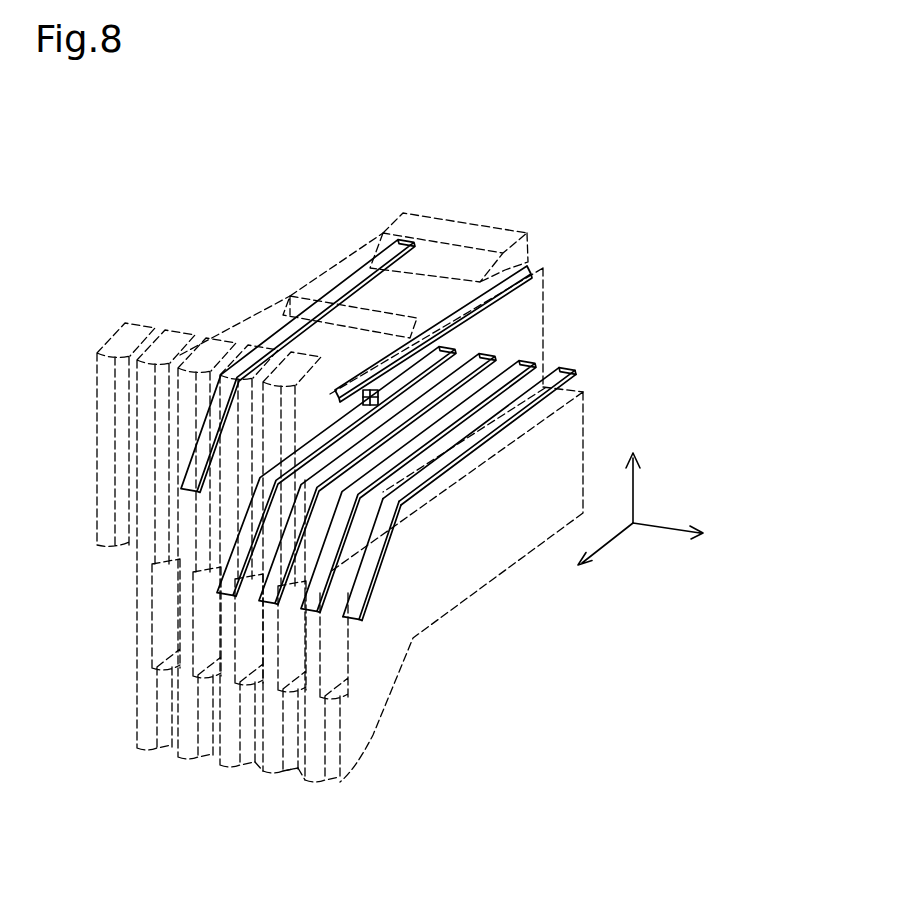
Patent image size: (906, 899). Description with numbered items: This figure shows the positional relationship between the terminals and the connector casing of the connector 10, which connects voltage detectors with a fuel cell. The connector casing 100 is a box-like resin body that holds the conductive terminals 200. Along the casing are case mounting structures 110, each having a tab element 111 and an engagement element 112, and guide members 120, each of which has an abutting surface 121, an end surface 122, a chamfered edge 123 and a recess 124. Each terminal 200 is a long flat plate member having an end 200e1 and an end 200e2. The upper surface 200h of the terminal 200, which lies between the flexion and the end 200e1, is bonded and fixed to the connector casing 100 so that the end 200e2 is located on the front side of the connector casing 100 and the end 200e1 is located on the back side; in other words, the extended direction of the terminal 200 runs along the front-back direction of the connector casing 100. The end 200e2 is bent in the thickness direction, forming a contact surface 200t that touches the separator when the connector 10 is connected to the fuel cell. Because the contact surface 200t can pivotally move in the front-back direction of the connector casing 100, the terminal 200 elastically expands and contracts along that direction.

The connector 10 is at (378, 484).
The connector casing 100 is at (550, 328).
The case mounting structure 110 is at (407, 249).
The tab element 111 is at (457, 232).
The engagement element 112 is at (327, 298).
The guide member 120 is at (308, 598).
The abutting surface 121 is at (300, 777).
The end surface 122 is at (270, 775).
The chamfered edge 123 is at (290, 775).
The recess 124 is at (163, 627).
The terminal 200 is at (449, 482).
The end 200e1 is at (575, 370).
The end 200e2 is at (357, 623).
The upper surface 200h is at (443, 463).
The contact surface 200t is at (367, 573).